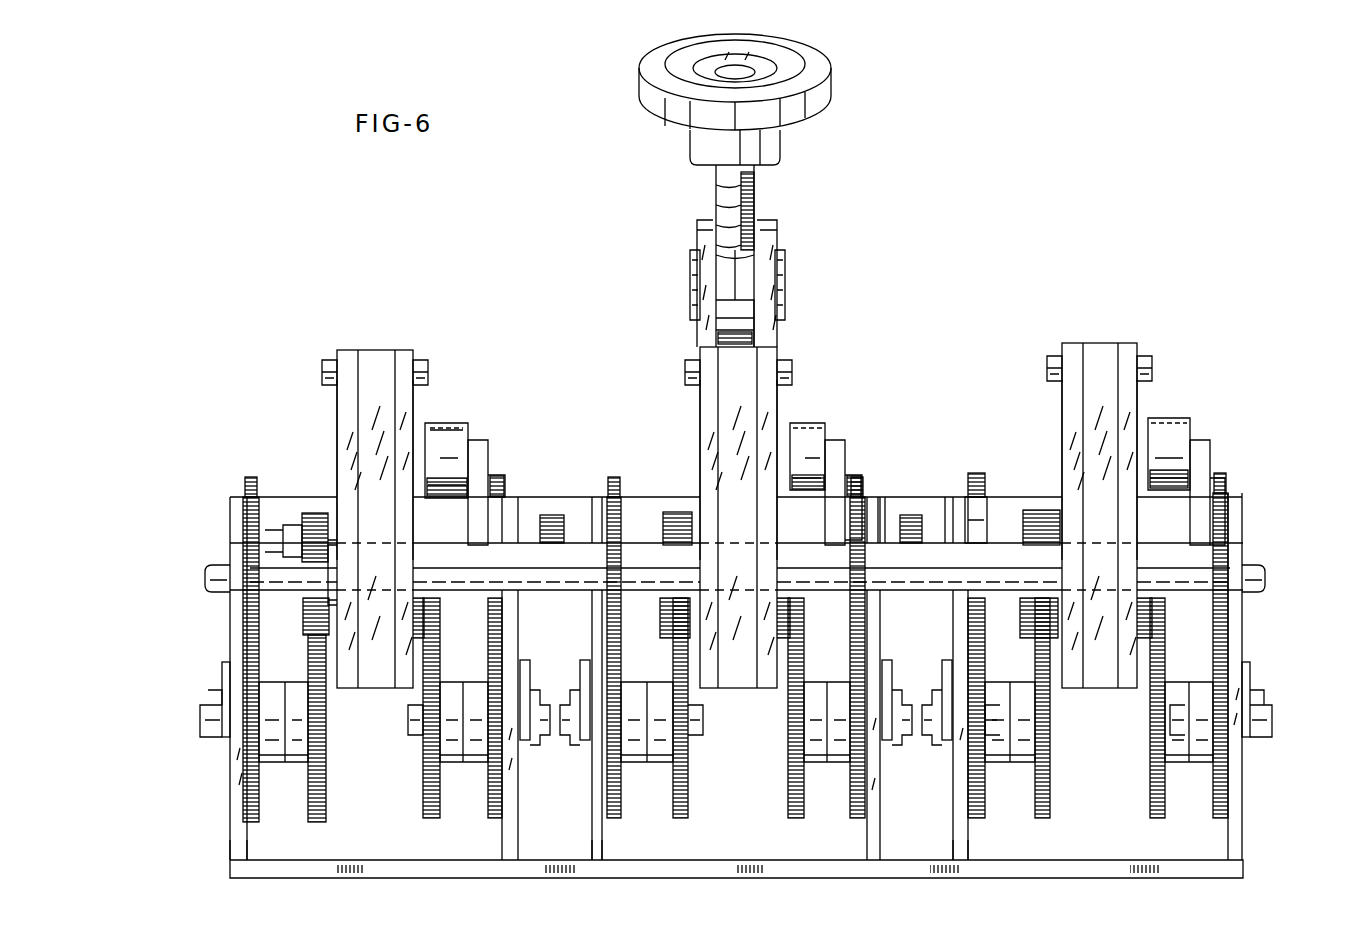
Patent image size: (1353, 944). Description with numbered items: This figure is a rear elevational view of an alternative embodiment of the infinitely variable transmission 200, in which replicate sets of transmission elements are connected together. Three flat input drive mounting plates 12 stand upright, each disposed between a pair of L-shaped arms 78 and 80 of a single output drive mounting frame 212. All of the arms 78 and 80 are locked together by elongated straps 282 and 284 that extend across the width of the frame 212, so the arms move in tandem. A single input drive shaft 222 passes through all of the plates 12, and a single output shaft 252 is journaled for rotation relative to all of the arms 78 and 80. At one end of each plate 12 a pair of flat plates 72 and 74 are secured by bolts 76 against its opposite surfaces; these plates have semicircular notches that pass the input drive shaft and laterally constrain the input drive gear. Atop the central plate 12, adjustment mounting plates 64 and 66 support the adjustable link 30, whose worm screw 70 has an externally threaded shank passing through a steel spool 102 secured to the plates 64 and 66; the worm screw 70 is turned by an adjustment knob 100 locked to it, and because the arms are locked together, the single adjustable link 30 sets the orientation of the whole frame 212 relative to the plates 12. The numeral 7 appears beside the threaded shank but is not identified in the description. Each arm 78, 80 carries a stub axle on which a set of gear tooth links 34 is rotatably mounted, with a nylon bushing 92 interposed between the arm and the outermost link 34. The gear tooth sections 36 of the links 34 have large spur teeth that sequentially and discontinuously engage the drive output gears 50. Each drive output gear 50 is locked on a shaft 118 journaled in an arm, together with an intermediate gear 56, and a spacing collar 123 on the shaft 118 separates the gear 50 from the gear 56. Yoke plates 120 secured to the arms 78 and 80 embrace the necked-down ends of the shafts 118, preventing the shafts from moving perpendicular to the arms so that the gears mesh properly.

The section line 7 is at (728, 195).
The input drive mounting plate 12 is at (378, 348).
The adjustable link 30 is at (628, 152).
The gear tooth links 34 is at (490, 455).
The gear tooth sections 36 is at (443, 435).
The drive output gears 50 is at (425, 818).
The intermediate gears 56 is at (240, 830).
The adjustment mounting plate 64 is at (770, 225).
The adjustment mounting plate 66 is at (705, 312).
The worm screw 70 is at (715, 333).
The flat plate 72 is at (413, 398).
The flat plate 74 is at (337, 400).
The bolts 76 is at (322, 368).
The arm 78 is at (518, 832).
The arm 80 is at (230, 845).
The nylon bushing 92 is at (250, 508).
The adjustment knob 100 is at (818, 88).
The steel spool 102 is at (723, 272).
The shaft 118 is at (200, 718).
The yoke plates 120 is at (222, 665).
The spacing collars 123 is at (276, 765).
The infinitely variable transmission 200 is at (1178, 300).
The output drive mounting frame 212 is at (880, 490).
The input drive shaft 222 is at (895, 535).
The output shaft 252 is at (215, 588).
The elongated strap 282 is at (932, 500).
The elongated strap 284 is at (1220, 880).